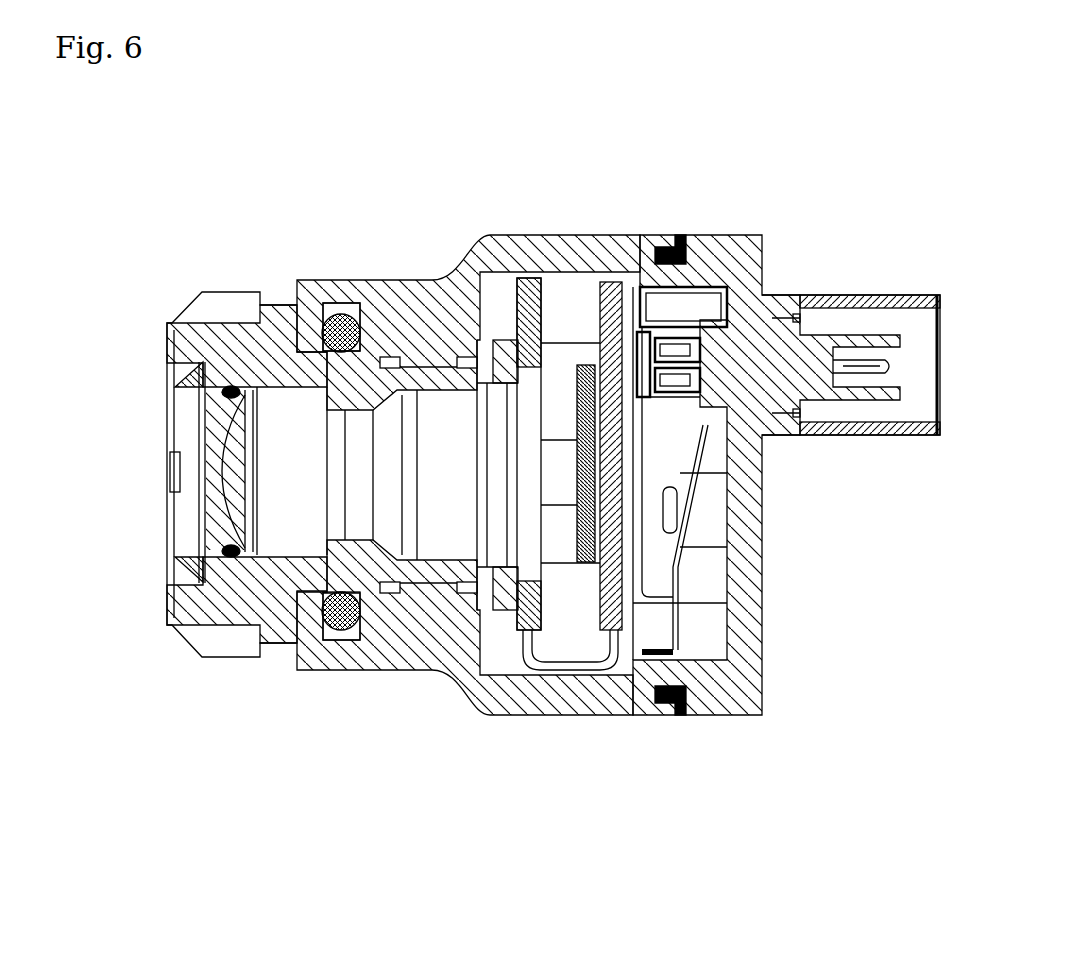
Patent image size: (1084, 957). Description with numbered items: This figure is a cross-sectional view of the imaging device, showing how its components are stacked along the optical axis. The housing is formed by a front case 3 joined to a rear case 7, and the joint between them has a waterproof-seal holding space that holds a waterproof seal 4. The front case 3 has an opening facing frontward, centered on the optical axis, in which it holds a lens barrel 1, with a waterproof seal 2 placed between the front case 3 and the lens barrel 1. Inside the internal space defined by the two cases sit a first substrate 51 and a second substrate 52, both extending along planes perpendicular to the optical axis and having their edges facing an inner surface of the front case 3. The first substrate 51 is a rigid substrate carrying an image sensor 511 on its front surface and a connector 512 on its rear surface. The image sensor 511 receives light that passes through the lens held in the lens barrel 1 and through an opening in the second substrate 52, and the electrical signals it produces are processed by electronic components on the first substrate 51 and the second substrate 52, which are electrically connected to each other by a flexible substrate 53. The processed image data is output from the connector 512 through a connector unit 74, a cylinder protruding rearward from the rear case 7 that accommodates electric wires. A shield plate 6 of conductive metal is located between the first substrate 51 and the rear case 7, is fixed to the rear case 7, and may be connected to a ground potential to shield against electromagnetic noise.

The lens barrel 1 is at (265, 292).
The waterproof seal 2 is at (332, 302).
The front case 3 is at (408, 282).
The waterproof seal 4 is at (661, 237).
The shield plate 6 is at (682, 624).
The rear case 7 is at (722, 236).
The first substrate 51 is at (605, 282).
The second substrate 52 is at (523, 278).
The flexible substrate 53 is at (530, 668).
The connector unit 74 is at (853, 295).
The image sensor 511 is at (581, 562).
The connector 512 is at (702, 384).